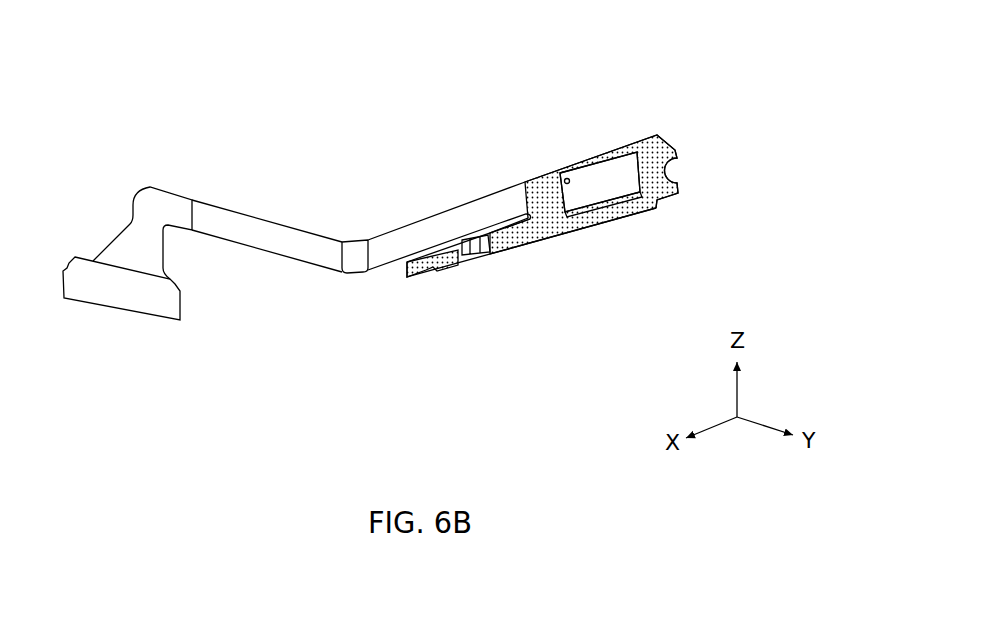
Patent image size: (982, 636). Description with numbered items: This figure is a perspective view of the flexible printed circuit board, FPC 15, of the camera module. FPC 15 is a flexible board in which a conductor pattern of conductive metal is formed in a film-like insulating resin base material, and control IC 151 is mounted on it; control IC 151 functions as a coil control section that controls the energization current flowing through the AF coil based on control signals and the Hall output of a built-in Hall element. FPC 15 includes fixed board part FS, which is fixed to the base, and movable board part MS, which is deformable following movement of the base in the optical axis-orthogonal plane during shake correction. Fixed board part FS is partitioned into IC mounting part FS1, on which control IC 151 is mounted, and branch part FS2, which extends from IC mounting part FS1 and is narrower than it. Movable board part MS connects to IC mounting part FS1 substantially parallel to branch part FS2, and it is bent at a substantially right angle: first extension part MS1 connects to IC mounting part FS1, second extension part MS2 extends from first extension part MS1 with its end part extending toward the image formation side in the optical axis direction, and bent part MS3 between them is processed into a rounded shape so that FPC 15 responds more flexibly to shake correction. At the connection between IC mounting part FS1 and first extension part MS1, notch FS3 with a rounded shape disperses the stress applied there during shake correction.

The FPC 15 is at (608, 164).
The control IC 151 is at (597, 187).
The movable board part MS is at (294, 230).
The first extension part MS1 is at (442, 207).
The second extension part MS2 is at (212, 210).
The bent part MS3 is at (355, 250).
The fixed board part FS is at (542, 211).
The IC mounting part FS1 is at (543, 183).
The branch part FS2 is at (440, 262).
The notch FS3 is at (529, 217).